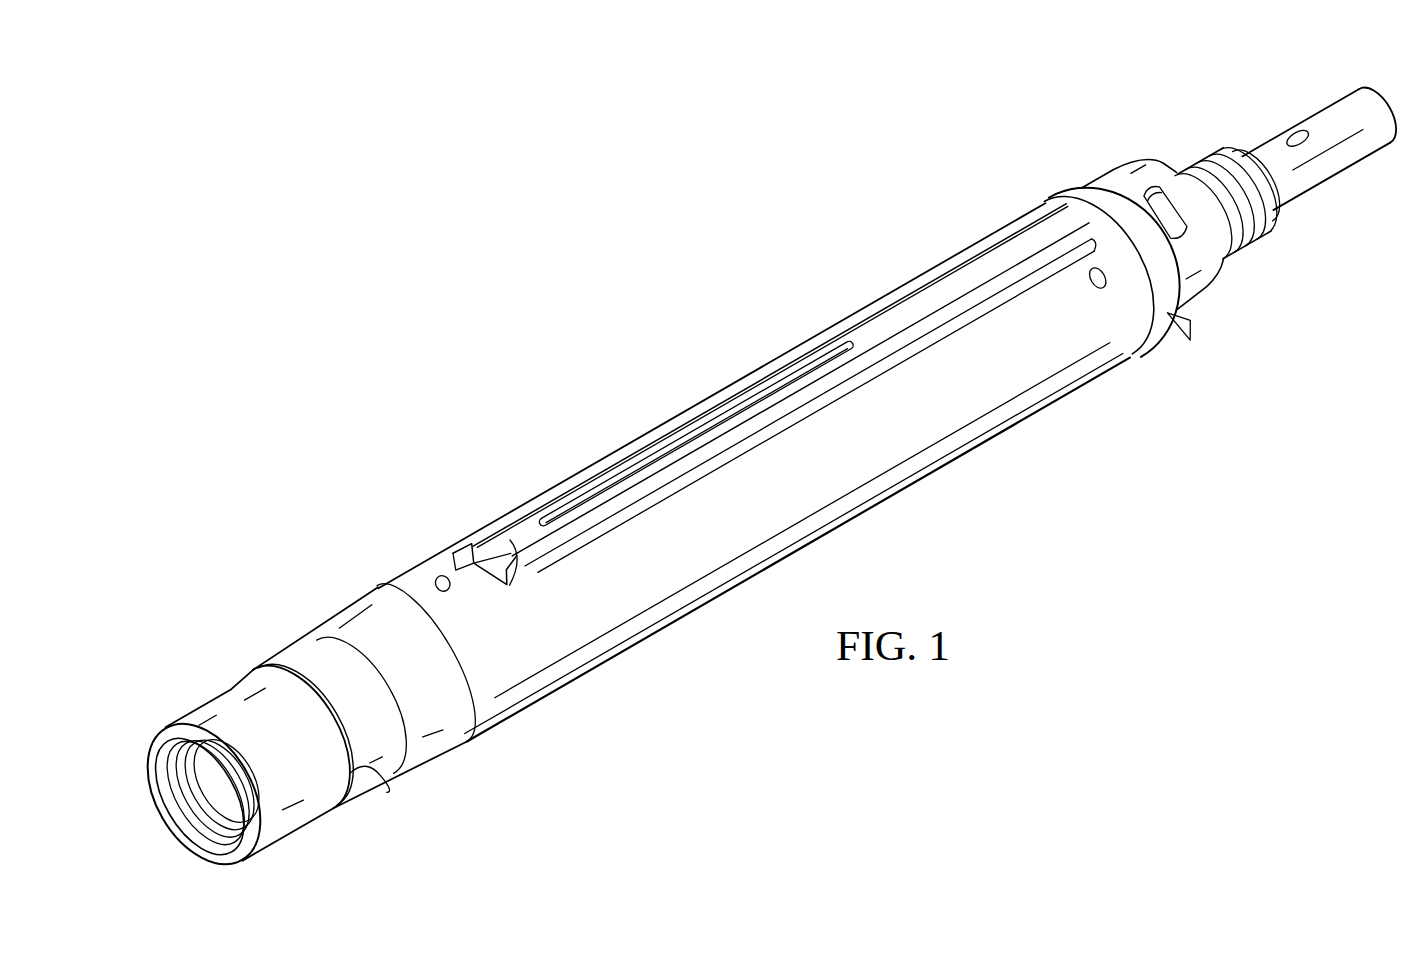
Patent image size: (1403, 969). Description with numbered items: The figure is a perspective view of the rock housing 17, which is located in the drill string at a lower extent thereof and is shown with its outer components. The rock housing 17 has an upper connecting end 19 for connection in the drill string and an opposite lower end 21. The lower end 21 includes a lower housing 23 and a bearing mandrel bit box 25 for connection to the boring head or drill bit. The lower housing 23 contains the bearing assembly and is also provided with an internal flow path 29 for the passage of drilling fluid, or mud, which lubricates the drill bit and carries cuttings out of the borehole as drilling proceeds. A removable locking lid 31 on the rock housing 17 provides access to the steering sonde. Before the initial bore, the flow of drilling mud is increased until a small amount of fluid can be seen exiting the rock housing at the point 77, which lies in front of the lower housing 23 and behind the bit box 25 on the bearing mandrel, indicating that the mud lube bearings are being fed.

The rock housing 17 is at (1033, 431).
The upper connecting end 19 is at (1288, 105).
The lower end 21 is at (297, 842).
The lower housing 23 is at (304, 648).
The bearing mandrel bit box 25 is at (232, 700).
The internal flow path 29 is at (188, 804).
The removable locking lid 31 is at (896, 317).
The point 77 is at (357, 777).